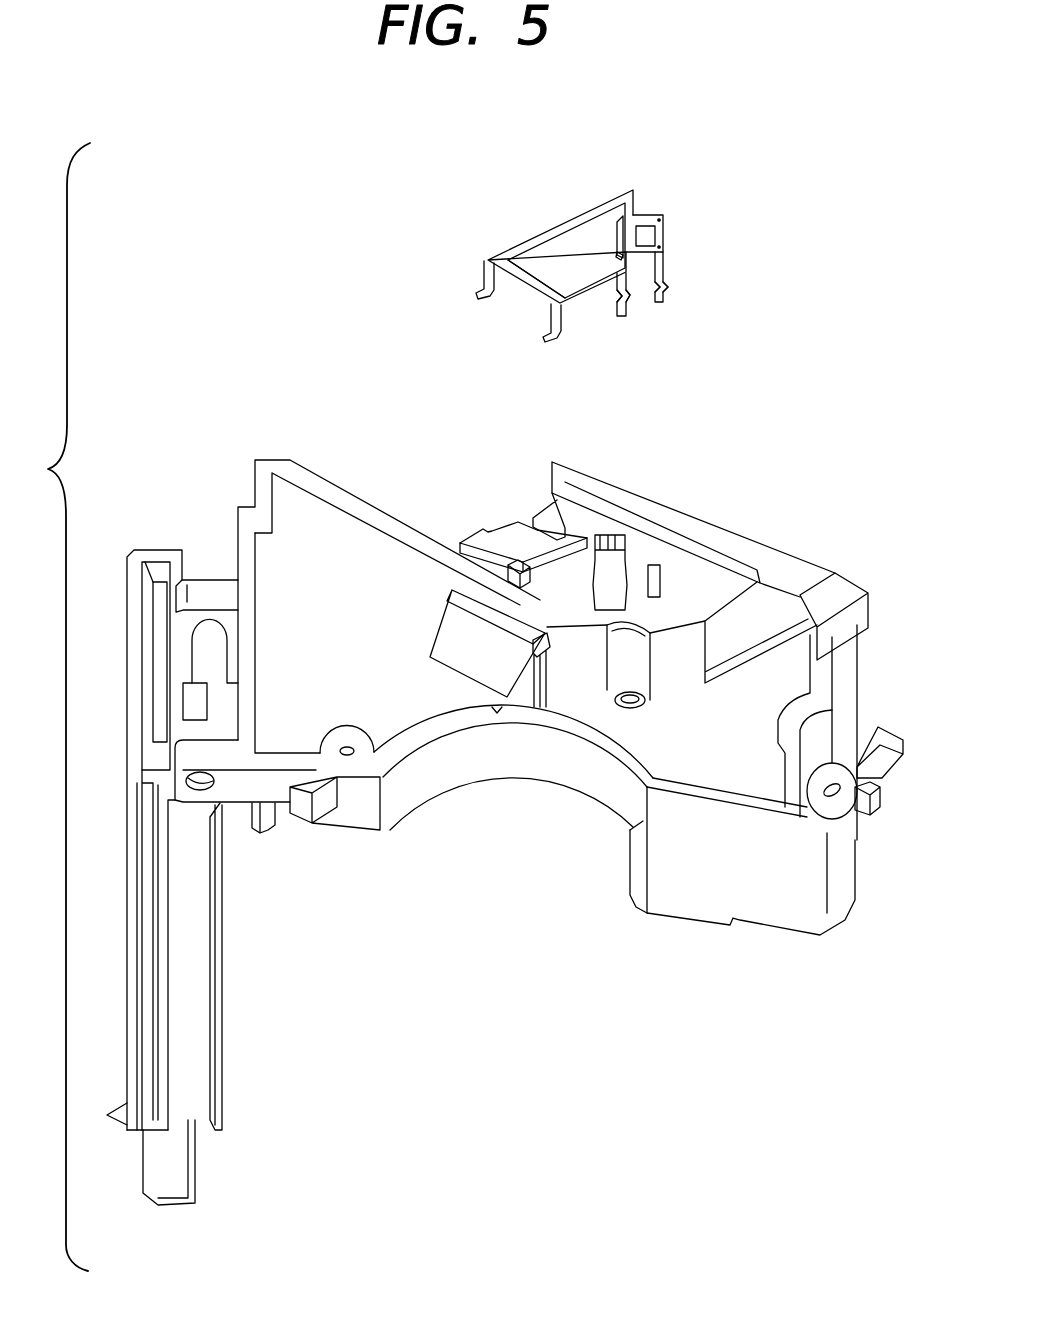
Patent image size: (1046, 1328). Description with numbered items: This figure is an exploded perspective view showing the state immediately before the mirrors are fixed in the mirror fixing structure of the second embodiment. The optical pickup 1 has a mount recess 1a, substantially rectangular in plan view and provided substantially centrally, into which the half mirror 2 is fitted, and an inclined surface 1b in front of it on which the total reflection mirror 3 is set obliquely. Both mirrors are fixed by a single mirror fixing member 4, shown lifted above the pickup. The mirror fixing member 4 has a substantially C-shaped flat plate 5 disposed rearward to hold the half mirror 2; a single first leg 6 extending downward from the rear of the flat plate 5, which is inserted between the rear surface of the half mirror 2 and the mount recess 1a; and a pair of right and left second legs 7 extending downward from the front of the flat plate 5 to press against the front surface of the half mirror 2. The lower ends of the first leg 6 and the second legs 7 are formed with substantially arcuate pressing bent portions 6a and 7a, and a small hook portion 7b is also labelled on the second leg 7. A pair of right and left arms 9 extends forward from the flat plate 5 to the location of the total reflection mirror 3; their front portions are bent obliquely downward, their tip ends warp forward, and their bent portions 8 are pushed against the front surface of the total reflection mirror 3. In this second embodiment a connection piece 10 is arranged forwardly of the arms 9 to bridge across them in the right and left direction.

The optical pickup 1 is at (722, 543).
The mount recess 1a is at (632, 540).
The inclined surface 1b is at (557, 647).
The half mirror 2 is at (612, 565).
The total reflection mirror 3 is at (465, 660).
The mirror fixing member 4 is at (655, 200).
The flat plate 5 is at (667, 225).
The first leg 6 is at (672, 262).
The pressing bent portion 6a is at (676, 286).
The second leg 7 is at (620, 228).
The pressing bent portion 7a is at (640, 305).
The hook portion 7b is at (615, 250).
The bent portion 8 is at (478, 289).
The arm 9 is at (545, 232).
The connection piece 10 is at (530, 283).